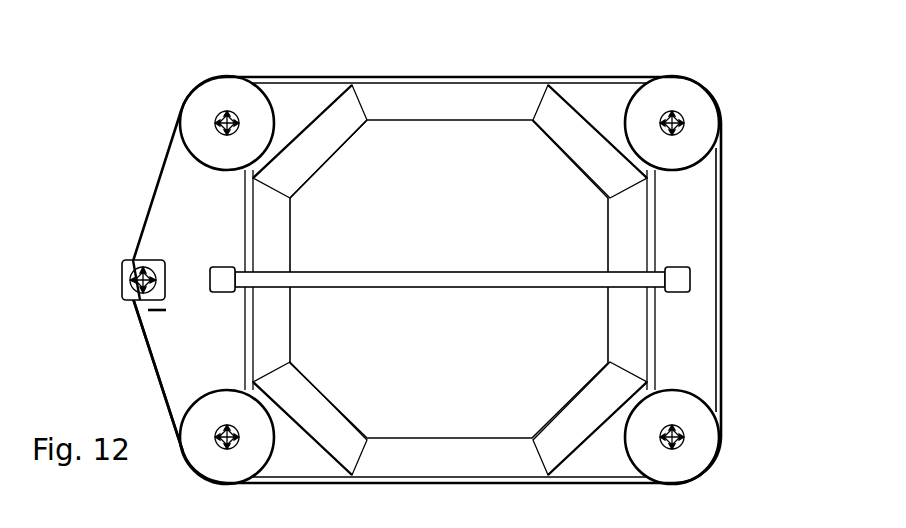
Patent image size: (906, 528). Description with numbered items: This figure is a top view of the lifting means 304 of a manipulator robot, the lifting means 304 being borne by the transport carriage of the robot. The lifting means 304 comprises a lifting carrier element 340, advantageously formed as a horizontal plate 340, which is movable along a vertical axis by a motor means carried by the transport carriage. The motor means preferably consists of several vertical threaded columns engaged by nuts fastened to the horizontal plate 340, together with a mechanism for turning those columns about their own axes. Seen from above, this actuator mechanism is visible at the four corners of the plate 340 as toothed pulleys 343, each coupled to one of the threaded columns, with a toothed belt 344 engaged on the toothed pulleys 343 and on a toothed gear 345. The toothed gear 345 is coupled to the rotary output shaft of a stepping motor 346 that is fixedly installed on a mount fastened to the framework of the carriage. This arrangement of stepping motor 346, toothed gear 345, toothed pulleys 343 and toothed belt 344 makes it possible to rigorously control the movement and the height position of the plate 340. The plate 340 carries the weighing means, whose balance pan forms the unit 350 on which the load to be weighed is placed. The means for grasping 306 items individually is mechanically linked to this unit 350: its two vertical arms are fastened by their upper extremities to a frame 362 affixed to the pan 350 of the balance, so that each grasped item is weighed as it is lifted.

The lifting means 304 is at (136, 211).
The means for grasping 306 is at (445, 108).
The lifting carrier element 340 is at (607, 117).
The toothed pulleys 343 is at (210, 110).
The toothed belt 344 is at (152, 378).
The toothed gear 345 is at (150, 260).
The stepping motor 346 is at (153, 293).
The unit of the weighing means 350 is at (480, 210).
The frame 362 is at (347, 113).